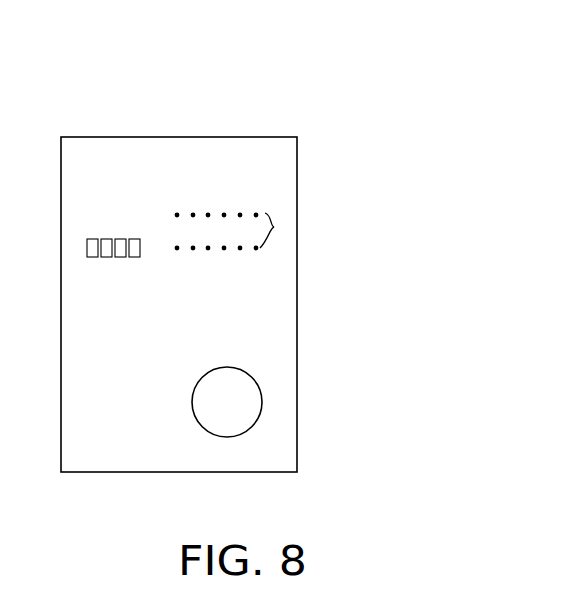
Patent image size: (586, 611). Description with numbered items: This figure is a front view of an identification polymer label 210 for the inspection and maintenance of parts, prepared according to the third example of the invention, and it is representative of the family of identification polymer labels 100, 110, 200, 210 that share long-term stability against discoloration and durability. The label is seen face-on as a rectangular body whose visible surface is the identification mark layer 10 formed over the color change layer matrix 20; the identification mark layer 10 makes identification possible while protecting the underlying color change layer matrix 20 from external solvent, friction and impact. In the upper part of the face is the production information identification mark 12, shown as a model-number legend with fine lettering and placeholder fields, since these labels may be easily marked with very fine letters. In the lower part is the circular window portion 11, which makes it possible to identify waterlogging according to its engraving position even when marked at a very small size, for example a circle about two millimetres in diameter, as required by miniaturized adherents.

The identification polymer label 100 is at (245, 256).
The identification polymer label 110 is at (245, 256).
The identification polymer label 200 is at (245, 256).
The identification polymer label 210 is at (245, 256).
The color change layer matrix 20 is at (245, 256).
The identification mark layer 10 is at (345, 70).
The production information identification mark 12 is at (274, 227).
The window portion 11 is at (262, 401).